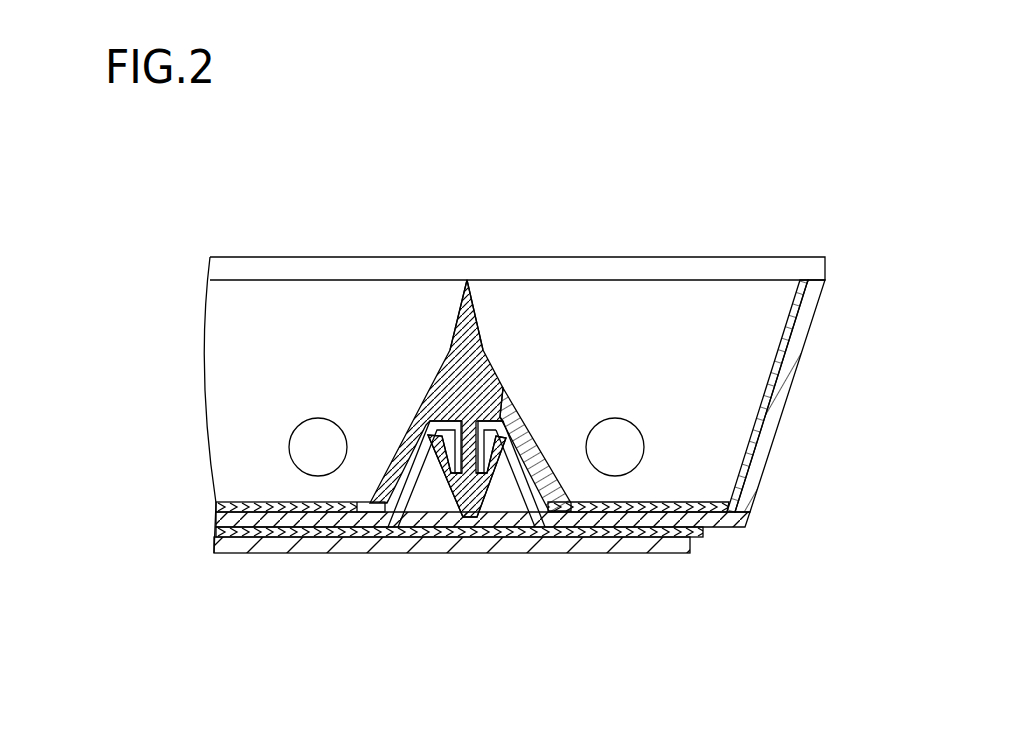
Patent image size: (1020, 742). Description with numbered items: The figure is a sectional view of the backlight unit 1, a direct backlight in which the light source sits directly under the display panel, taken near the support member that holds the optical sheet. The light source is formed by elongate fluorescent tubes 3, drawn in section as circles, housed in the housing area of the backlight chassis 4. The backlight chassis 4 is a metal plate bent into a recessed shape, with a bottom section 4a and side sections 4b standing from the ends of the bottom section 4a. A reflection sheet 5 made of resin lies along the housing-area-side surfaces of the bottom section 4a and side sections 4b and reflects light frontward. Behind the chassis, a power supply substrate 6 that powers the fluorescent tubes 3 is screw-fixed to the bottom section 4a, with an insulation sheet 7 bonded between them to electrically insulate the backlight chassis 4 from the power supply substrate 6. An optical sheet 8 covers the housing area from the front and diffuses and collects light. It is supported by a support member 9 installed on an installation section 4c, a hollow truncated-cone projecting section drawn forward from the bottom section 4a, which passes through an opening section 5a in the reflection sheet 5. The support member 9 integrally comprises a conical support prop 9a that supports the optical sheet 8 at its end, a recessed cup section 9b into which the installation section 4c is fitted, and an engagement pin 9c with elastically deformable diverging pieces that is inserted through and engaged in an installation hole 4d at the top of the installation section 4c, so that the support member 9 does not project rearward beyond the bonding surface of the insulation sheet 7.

The backlight unit 1 is at (538, 402).
The fluorescent tubes 3 is at (320, 416).
The backlight chassis 4 is at (525, 439).
The bottom section 4a is at (714, 520).
The side sections 4b is at (764, 457).
The installation section 4c is at (523, 497).
The installation hole 4d is at (452, 497).
The reflection sheet 5 is at (783, 365).
The opening section 5a is at (363, 510).
The power supply substrate 6 is at (603, 545).
The insulation sheet 7 is at (645, 530).
The optical sheet 8 is at (817, 268).
The support member 9 is at (470, 452).
The support prop 9a is at (477, 316).
The cup section 9b is at (533, 440).
The engagement pin 9c is at (454, 508).